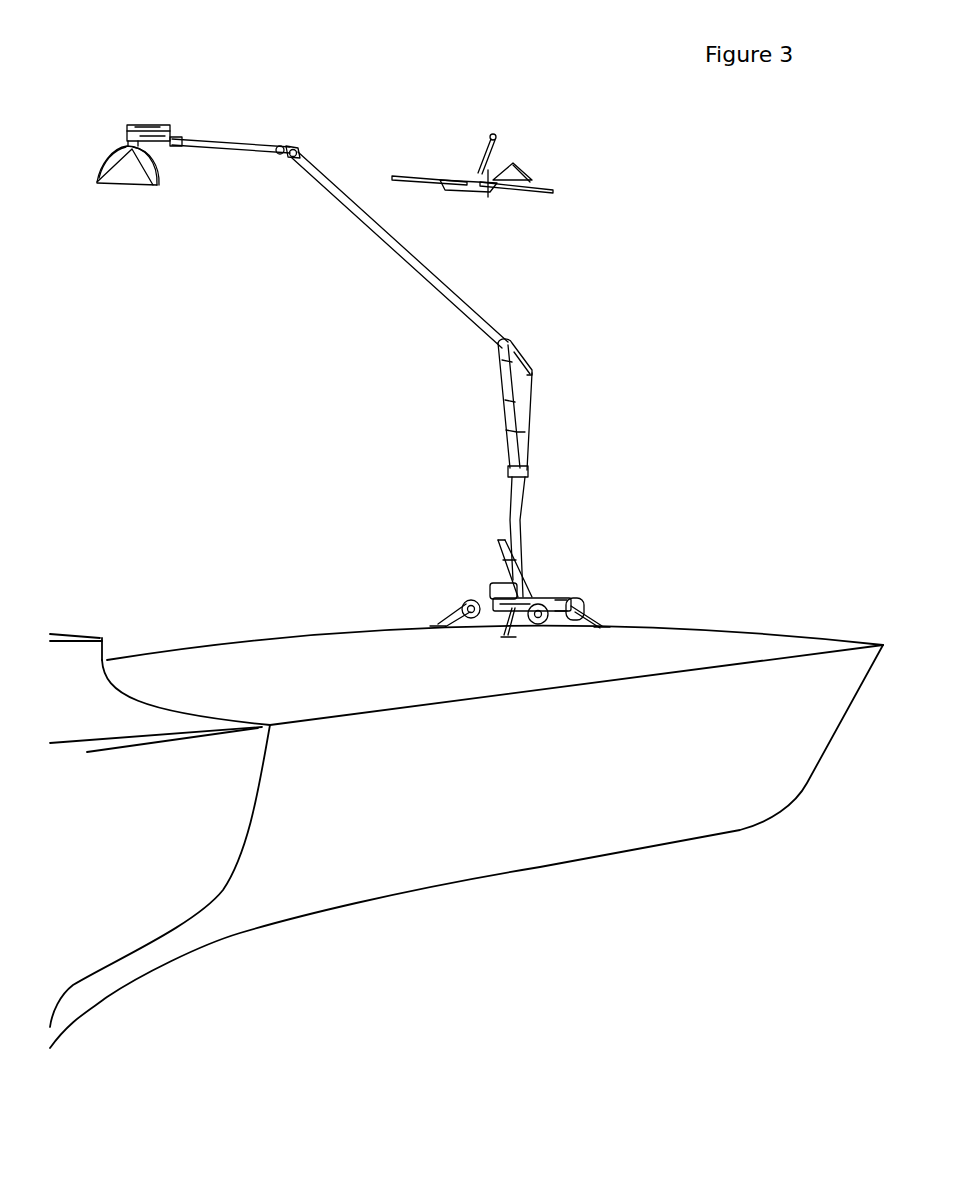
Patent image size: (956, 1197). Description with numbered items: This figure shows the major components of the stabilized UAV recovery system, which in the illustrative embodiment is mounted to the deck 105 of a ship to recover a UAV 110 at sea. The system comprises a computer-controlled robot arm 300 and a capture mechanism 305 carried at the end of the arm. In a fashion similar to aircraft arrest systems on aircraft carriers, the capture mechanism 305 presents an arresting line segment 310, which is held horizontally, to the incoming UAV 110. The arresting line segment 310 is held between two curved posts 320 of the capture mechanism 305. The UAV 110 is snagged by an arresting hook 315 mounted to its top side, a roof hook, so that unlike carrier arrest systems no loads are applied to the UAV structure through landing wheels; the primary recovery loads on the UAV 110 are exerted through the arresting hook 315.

The deck 105 is at (755, 640).
The UAV 110 is at (467, 204).
The computer-controlled robot arm 300 is at (492, 317).
The capture mechanism 305 is at (150, 113).
The arresting line segment 310 is at (127, 191).
The arresting hook 315 is at (478, 153).
The curved posts 320 is at (107, 155).